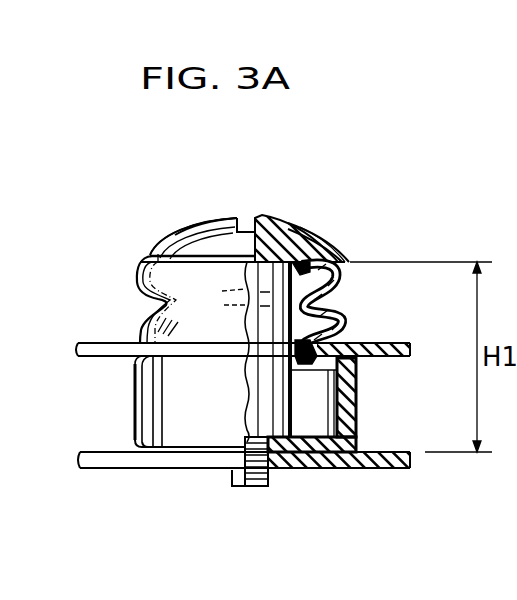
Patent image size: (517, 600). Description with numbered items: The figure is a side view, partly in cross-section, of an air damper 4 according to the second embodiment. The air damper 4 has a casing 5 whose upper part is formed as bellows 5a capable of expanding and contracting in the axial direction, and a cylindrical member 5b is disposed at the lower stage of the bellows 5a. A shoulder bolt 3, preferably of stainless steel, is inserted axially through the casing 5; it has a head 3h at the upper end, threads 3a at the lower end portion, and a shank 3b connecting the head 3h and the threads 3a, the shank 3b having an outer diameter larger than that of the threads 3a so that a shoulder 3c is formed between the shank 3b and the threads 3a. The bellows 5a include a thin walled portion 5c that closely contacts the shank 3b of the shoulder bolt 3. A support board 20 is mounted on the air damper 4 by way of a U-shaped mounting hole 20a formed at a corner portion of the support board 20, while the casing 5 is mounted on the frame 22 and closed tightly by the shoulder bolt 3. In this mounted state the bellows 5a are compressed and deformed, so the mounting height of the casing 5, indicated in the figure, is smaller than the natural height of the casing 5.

The shoulder bolt 3 is at (258, 212).
The head 3h is at (207, 236).
The threads 3a is at (262, 486).
The shank 3b is at (250, 298).
The shoulder 3c is at (262, 434).
The air damper 4 is at (334, 222).
The casing 5 is at (133, 276).
The bellows 5a is at (343, 285).
The cylindrical member 5b is at (354, 412).
The thin walled portion 5c is at (296, 226).
The support board 20 is at (388, 344).
The mounting hole 20a is at (354, 361).
The frame 22 is at (386, 470).